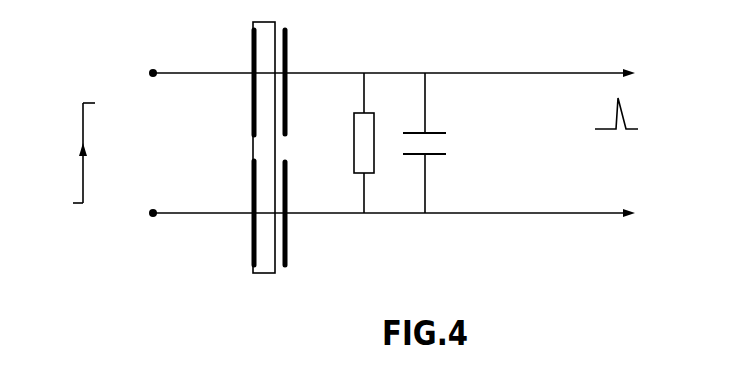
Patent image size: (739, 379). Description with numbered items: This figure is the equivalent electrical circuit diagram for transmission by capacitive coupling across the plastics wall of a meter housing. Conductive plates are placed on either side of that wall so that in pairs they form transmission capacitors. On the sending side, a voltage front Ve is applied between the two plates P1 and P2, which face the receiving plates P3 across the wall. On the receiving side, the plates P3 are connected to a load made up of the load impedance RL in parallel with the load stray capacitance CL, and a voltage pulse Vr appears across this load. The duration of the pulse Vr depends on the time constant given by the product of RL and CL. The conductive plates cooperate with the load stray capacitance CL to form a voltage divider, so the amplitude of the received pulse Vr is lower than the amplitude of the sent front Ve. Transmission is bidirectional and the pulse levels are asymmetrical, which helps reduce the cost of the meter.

The conductive plate P1 is at (216, 80).
The conductive plate P2 is at (216, 210).
The conductive plate P3 is at (322, 149).
The load impedance RL is at (363, 158).
The load stray capacitance CL is at (437, 143).
The voltage front Ve is at (64, 153).
The voltage pulse Vr is at (616, 131).